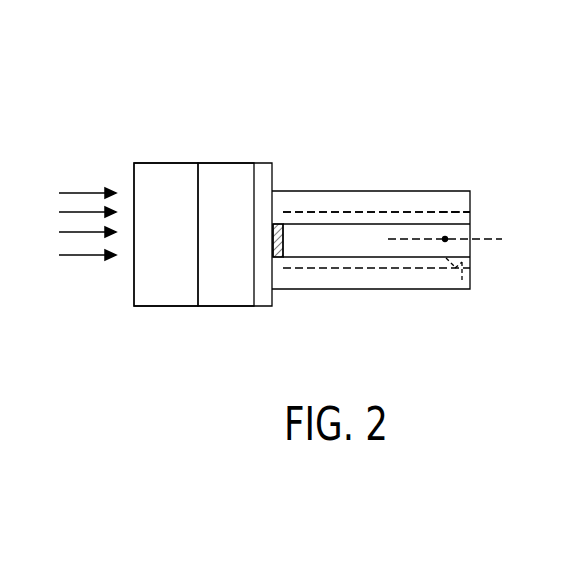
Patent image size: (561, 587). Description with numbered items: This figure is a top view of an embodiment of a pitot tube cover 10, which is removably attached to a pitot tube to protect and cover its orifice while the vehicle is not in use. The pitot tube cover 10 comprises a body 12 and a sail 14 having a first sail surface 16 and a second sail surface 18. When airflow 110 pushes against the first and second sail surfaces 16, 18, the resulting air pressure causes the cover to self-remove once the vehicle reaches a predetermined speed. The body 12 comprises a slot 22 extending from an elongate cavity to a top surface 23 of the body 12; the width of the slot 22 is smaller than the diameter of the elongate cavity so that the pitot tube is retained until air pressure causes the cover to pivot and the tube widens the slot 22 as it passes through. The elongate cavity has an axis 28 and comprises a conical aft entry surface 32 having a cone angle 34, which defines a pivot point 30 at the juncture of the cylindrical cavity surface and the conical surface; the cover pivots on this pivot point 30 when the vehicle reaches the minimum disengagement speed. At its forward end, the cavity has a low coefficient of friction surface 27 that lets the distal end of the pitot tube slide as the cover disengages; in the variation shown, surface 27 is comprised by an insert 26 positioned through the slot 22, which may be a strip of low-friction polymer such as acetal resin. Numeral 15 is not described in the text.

The pitot tube cover 10 is at (405, 80).
The airflow 110 is at (74, 168).
The sail 14 is at (222, 112).
The second sail surface 18 is at (166, 163).
The first sail surface 16 is at (232, 163).
The body 12 is at (393, 191).
The top surface 23 is at (428, 200).
The sensing element 15 is at (348, 212).
The slot 22 is at (335, 242).
The insert 26 is at (282, 208).
The low coefficient of friction surface 27 is at (290, 257).
The axis 28 is at (486, 239).
The pivot point 30 is at (443, 241).
The conical aft entry surface 32 is at (448, 222).
The cone angle 34 is at (465, 262).